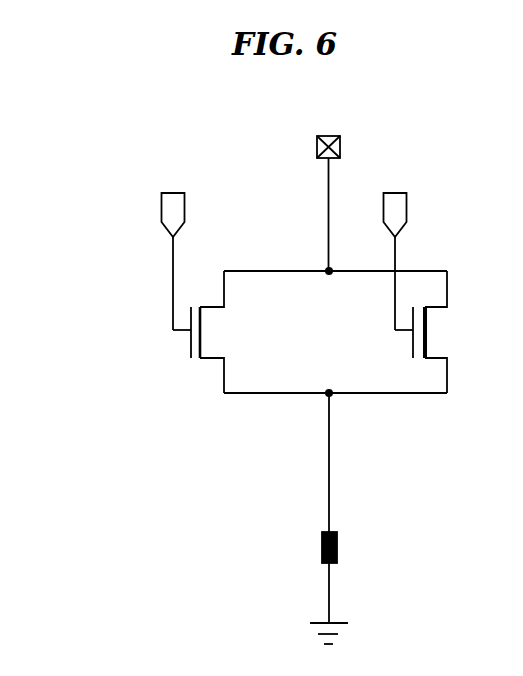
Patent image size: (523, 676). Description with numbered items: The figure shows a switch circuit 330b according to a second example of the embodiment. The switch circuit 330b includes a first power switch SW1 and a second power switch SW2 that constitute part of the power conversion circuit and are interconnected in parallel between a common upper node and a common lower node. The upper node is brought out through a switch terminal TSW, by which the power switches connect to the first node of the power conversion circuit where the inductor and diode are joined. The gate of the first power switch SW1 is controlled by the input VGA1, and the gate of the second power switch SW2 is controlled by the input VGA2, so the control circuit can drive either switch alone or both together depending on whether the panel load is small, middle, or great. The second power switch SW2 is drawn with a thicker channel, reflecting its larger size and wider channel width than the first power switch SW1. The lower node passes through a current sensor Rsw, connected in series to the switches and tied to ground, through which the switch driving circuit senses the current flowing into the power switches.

The switch circuit 330b is at (92, 547).
The switch terminal TSW is at (328, 187).
The first gate control voltage input VGA1 is at (167, 243).
The second gate control voltage input VGA2 is at (391, 243).
The first power switch SW1 is at (215, 332).
The second power switch SW2 is at (437, 332).
The current sensor Rsw is at (302, 508).